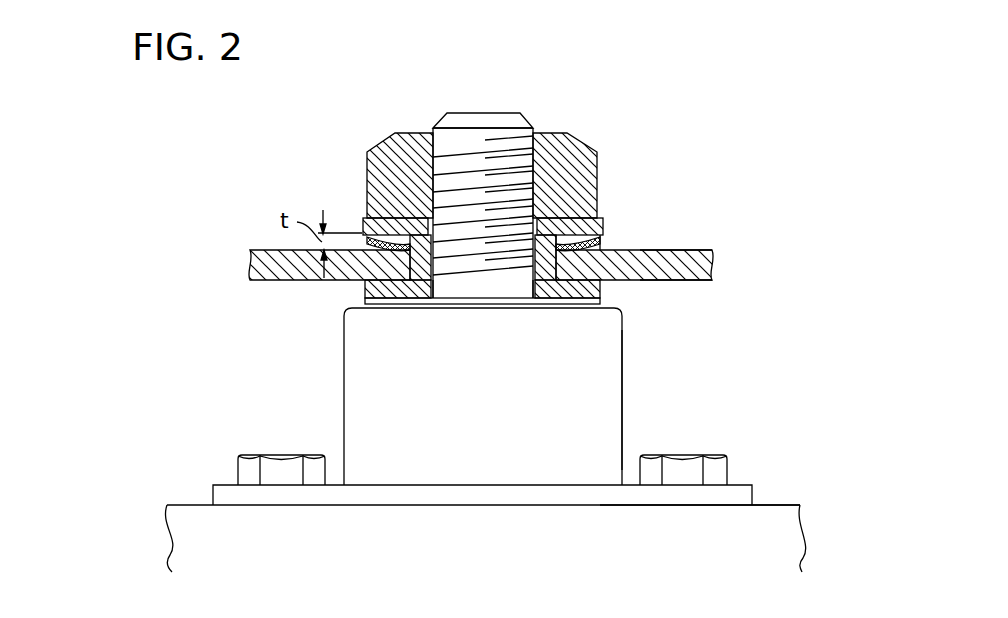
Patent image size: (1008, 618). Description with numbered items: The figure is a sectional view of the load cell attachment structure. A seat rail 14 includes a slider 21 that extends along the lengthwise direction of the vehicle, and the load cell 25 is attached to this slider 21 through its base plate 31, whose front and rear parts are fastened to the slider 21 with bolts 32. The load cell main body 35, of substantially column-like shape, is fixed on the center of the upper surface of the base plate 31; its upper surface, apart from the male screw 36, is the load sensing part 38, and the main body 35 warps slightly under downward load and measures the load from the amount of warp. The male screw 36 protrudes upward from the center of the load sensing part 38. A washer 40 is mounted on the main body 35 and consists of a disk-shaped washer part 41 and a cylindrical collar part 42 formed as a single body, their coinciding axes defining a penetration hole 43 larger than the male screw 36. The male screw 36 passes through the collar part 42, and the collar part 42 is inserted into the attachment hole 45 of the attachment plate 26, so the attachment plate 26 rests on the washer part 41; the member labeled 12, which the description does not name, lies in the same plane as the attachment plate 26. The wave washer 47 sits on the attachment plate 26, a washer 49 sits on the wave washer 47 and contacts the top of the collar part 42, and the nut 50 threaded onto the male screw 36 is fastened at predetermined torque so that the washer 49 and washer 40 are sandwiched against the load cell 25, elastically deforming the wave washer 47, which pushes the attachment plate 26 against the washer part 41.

The bus bar plate 12 is at (267, 252).
The seat rail 14 is at (807, 533).
The slider 21 is at (183, 542).
The load cell 25 is at (622, 415).
The attachment plate 26 is at (687, 257).
The base plate 31 is at (218, 489).
The bolts 32 is at (275, 462).
The load cell main body 35 is at (352, 393).
The male screw 36 is at (533, 165).
The load sensing part 38 is at (363, 292).
The washer 40 is at (602, 288).
The washer part 41 is at (565, 288).
The collar part 42 is at (558, 268).
The penetration hole 43 is at (440, 289).
The attachment hole 45 is at (430, 222).
The wave washer 47 is at (598, 242).
The washer 49 is at (364, 236).
The nut 50 is at (374, 150).